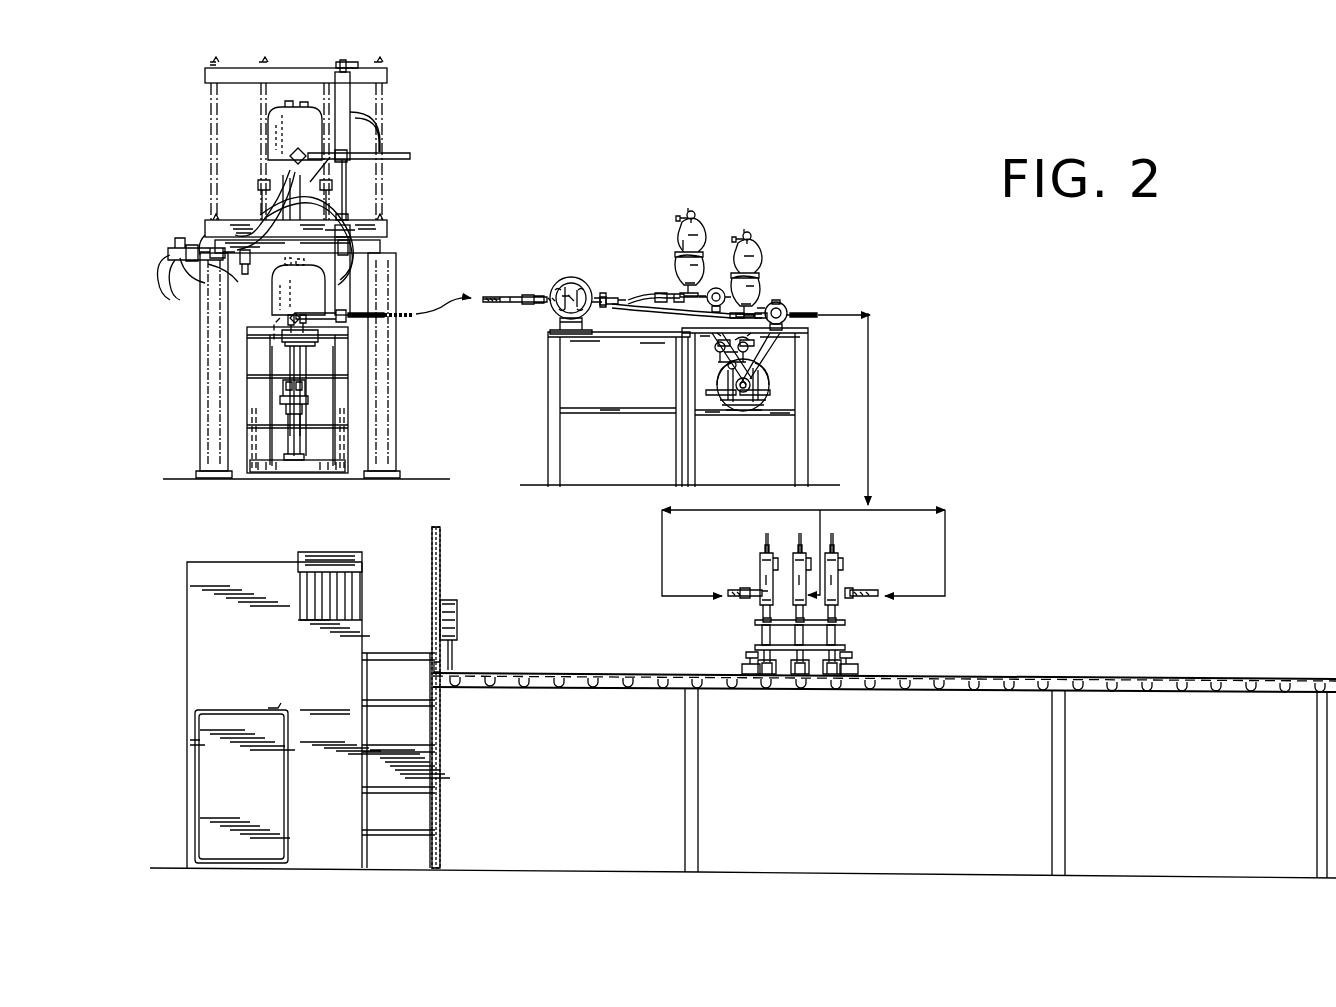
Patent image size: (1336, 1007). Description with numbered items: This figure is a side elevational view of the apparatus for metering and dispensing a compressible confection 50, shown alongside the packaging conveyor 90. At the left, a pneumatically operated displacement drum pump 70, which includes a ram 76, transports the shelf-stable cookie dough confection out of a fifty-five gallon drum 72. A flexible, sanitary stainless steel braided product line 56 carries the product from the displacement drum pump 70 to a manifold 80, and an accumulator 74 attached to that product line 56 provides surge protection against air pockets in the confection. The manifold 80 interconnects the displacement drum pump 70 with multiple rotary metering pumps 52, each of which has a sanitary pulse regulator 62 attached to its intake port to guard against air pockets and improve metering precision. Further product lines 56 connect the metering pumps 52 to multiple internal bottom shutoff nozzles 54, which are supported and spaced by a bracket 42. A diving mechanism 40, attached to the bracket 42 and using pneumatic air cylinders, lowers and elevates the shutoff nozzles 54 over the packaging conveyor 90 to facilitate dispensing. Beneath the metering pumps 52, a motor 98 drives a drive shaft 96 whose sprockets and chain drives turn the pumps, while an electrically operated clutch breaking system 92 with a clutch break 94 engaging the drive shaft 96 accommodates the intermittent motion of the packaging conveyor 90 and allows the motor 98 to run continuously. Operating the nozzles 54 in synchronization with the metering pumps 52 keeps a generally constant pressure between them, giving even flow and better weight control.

The diving mechanism 40 is at (859, 627).
The bracket 42 is at (752, 642).
The apparatus for metering and dispensing a compressible confection 50 is at (901, 107).
The metering pump 52 is at (777, 299).
The internal bottom shutoff nozzle 54 is at (757, 577).
The product line 56 is at (502, 295).
The sanitary pulse regulator 62 is at (677, 228).
The displacement drum pump 70 is at (464, 118).
The drum 72 is at (243, 395).
The accumulator 74 is at (355, 266).
The ram 76 is at (326, 458).
The manifold 80 is at (571, 276).
The packaging conveyor 90 is at (150, 605).
The clutch breaking system 92 is at (773, 364).
The clutch break 94 is at (718, 366).
The drive shaft 96 is at (746, 398).
The motor 98 is at (770, 388).